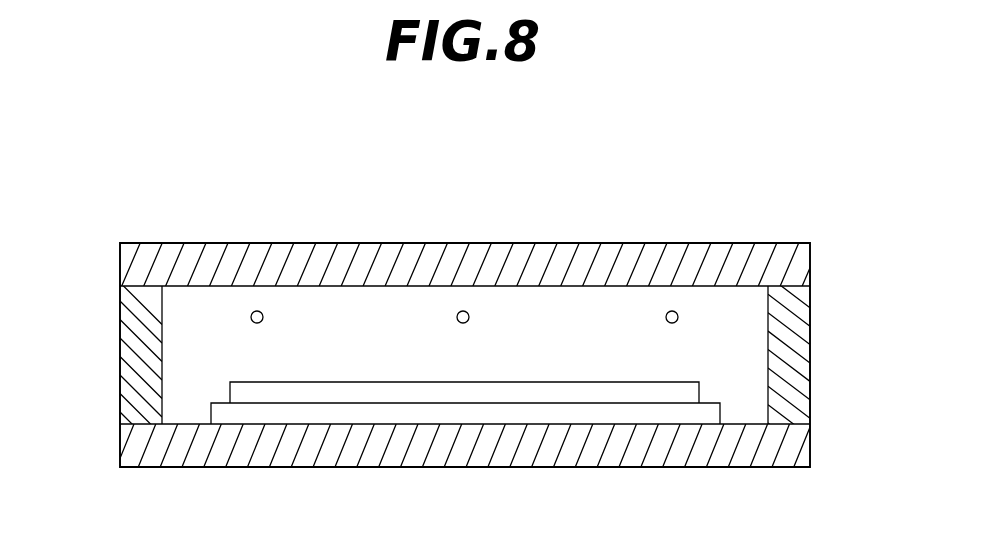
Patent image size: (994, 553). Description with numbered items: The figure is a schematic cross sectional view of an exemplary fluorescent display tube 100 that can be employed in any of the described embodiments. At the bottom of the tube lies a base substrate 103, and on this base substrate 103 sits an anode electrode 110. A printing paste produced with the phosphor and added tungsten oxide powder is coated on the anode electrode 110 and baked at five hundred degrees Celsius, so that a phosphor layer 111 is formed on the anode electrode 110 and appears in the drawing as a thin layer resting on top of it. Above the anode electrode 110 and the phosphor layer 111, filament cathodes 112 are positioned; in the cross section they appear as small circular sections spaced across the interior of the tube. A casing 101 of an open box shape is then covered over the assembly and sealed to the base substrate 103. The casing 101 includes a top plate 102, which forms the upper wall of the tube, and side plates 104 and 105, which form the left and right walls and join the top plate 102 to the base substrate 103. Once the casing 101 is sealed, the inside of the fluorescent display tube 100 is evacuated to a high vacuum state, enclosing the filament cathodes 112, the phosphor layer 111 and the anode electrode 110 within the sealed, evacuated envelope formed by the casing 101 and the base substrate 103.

The fluorescent display tube 100 is at (272, 132).
The casing 101 is at (671, 222).
The top plate 102 is at (367, 243).
The base substrate 103 is at (325, 458).
The side plate 104 is at (120, 345).
The side plate 105 is at (810, 345).
The anode electrode 110 is at (445, 412).
The phosphor layer 111 is at (557, 393).
The filament cathodes 112 is at (463, 311).